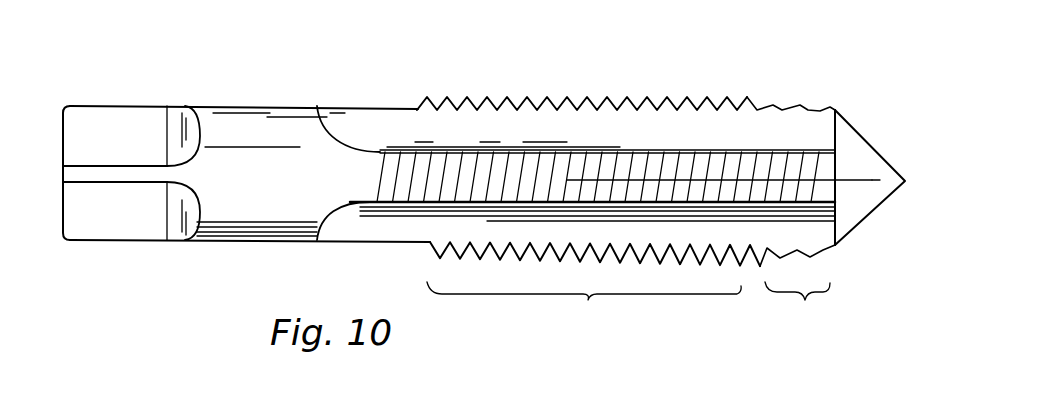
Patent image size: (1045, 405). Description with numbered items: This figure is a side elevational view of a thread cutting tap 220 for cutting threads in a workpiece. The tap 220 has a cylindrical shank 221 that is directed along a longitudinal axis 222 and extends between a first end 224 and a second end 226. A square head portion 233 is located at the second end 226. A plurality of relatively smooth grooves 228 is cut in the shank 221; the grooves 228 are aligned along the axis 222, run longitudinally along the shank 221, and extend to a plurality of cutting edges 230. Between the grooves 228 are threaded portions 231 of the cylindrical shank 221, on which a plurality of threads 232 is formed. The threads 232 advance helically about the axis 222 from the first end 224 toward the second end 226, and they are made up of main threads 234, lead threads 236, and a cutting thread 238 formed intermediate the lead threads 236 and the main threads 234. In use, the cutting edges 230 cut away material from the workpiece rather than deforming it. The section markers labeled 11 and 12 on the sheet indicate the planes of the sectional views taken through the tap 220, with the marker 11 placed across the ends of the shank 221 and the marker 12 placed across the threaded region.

The tap 220 is at (263, 106).
The cylindrical shank 221 is at (340, 181).
The longitudinal axis 222 is at (863, 178).
The first end 224 is at (890, 187).
The second end 226 is at (62, 226).
The grooves 228 is at (383, 109).
The cutting edges 230 is at (584, 152).
The threaded portions 231 is at (810, 157).
The threads 232 is at (545, 50).
The square head portion 233 is at (142, 106).
The main threads 234 is at (588, 300).
The lead threads 236 is at (805, 300).
The cutting thread 238 is at (748, 100).
The section line 11- 11 is at (45, 173).
The section line 12- 12 is at (747, 13).